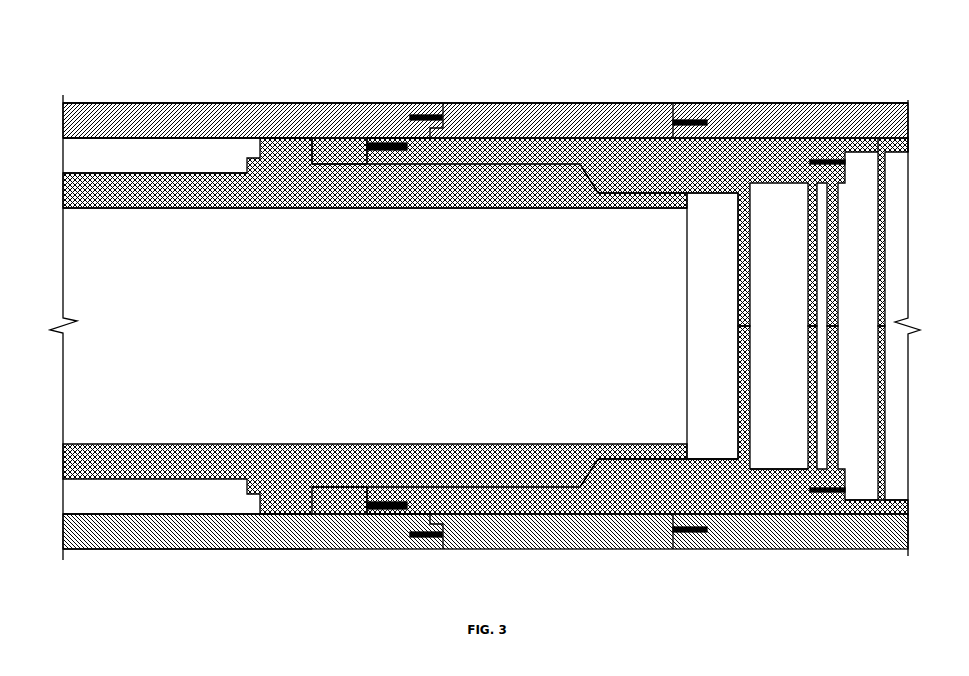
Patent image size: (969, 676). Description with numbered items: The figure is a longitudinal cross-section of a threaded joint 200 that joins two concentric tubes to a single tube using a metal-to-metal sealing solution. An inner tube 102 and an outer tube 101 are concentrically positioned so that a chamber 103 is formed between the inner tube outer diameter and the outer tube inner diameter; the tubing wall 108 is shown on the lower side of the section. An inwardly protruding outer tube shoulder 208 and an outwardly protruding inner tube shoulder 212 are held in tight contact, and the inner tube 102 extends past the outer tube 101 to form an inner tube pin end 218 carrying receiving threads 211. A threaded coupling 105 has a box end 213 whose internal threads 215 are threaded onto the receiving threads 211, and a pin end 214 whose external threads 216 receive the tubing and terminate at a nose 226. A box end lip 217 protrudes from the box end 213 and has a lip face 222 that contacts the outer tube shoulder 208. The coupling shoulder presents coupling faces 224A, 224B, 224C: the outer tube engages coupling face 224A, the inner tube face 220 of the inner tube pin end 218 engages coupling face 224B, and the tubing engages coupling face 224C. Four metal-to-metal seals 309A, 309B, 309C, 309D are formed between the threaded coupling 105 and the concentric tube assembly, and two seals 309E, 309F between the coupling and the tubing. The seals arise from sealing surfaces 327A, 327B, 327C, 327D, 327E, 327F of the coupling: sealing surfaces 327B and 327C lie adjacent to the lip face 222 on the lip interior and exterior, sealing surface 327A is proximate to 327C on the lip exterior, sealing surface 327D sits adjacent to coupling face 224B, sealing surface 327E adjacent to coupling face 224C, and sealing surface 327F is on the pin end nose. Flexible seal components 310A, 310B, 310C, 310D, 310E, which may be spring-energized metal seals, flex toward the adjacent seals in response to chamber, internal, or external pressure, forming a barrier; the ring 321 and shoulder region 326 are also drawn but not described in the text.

The threaded joint 200 is at (72, 56).
The outer tube 101 is at (107, 110).
The inner tube 102 is at (112, 196).
The chamber 103 is at (78, 158).
The threaded coupling 105 is at (488, 108).
The tubular wall 108 is at (167, 413).
The outer tube shoulder 208 is at (373, 115).
The receiving threads 211 is at (537, 172).
The inner tube shoulder 212 is at (287, 138).
The box end 213 is at (537, 523).
The pin end 214 is at (755, 498).
The internal threads 215 is at (467, 487).
The external threads 216 is at (730, 518).
The box end lip 217 is at (378, 490).
The inner tube pin end 218 is at (507, 175).
The inner tube face 220 is at (598, 190).
The lip face 222 is at (368, 520).
The coupling face 224A is at (445, 532).
The coupling face 224B is at (603, 472).
The coupling face 224C is at (672, 533).
The nose 226 is at (848, 517).
The metal-to-metal seal 309A is at (377, 128).
The metal-to-metal seal 309B is at (368, 163).
The metal-to-metal seal 309C is at (433, 163).
The metal-to-metal seal 309D is at (582, 166).
The metal-to-metal seal 309E is at (689, 160).
The metal-to-metal seal 309F is at (880, 153).
The flexible seal component 310A is at (370, 150).
The flexible seal component 310B is at (385, 132).
The flexible seal component 310C is at (582, 170).
The flexible seal component 310D is at (677, 128).
The flexible seal component 310E is at (818, 155).
The locking ring 321 is at (445, 128).
The shoulder 326 is at (592, 468).
The sealing surface 327A is at (427, 527).
The sealing surface 327B is at (375, 490).
The sealing surface 327C is at (373, 517).
The sealing surface 327D is at (597, 466).
The sealing surface 327E is at (712, 520).
The sealing surface 327F is at (876, 503).